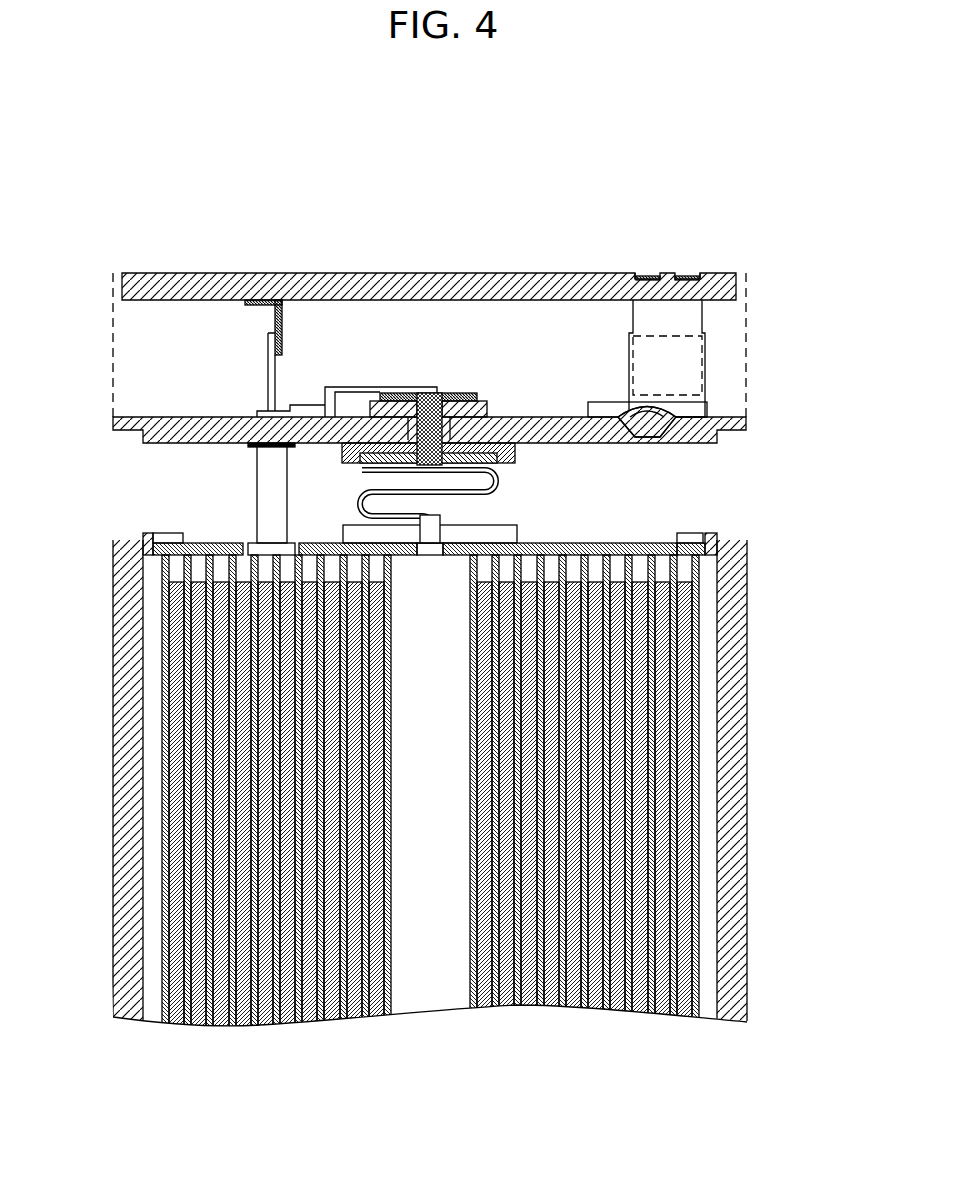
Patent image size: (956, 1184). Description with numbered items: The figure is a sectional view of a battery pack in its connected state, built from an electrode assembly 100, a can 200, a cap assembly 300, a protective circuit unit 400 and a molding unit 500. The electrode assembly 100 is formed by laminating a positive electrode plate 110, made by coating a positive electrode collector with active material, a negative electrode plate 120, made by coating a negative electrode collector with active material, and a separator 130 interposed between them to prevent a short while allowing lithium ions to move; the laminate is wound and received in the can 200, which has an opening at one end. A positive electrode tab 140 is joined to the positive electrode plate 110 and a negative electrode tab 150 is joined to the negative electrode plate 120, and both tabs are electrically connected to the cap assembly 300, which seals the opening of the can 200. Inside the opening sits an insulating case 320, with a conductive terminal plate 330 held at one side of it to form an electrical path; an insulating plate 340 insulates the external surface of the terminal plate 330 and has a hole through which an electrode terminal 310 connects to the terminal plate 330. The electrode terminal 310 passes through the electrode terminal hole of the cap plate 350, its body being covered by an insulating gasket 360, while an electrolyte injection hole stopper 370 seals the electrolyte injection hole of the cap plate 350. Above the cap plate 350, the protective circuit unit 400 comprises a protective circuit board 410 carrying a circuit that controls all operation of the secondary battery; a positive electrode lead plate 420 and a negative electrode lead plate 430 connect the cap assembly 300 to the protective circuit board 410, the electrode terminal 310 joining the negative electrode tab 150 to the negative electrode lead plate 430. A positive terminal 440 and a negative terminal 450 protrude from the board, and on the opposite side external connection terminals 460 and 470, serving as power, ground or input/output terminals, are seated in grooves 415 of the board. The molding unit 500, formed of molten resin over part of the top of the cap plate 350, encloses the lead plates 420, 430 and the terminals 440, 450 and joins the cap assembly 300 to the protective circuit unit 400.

The electrode assembly 100 is at (701, 760).
The positive electrode plate 110 is at (663, 1003).
The negative electrode plate 120 is at (685, 1007).
The separator 130 is at (697, 1010).
The positive electrode tab 140 is at (257, 492).
The negative electrode tab 150 is at (365, 497).
The can 200 is at (735, 660).
The cap assembly 300 is at (686, 458).
The electrode terminal 310 is at (448, 388).
The insulating case 320 is at (715, 535).
The terminal plate 330 is at (500, 470).
The insulating plate 340 is at (517, 452).
The cap plate 350 is at (608, 445).
The insulating gasket 360 is at (490, 402).
The electrolyte injection hole stopper 370 is at (617, 402).
The protective circuit unit 400 is at (191, 314).
The protective circuit board 410 is at (330, 273).
The grooves 415 is at (638, 273).
The positive electrode lead plate 420 is at (700, 408).
The negative electrode lead plate 430 is at (312, 405).
The positive terminal 440 is at (690, 316).
The negative terminal 450 is at (250, 305).
The external connection terminal 460 is at (648, 277).
The external connection terminal 470 is at (687, 278).
The molding unit 500 is at (750, 295).